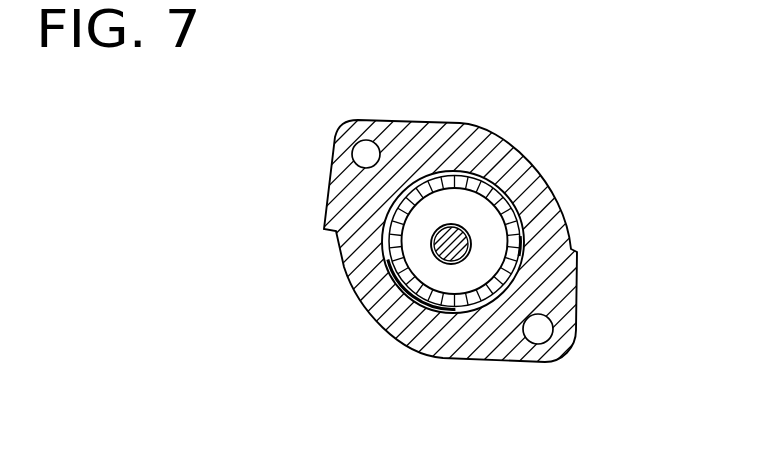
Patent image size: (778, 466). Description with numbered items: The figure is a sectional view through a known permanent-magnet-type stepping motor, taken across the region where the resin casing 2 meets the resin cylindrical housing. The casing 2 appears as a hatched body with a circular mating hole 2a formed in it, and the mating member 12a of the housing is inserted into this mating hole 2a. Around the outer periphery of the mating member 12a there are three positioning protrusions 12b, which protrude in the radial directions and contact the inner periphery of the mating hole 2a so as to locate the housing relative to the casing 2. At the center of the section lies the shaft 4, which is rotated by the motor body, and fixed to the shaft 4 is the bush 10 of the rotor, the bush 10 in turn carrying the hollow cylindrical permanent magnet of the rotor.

The resin casing 2 is at (550, 207).
The circular mating hole 2a is at (520, 262).
The shaft 4 is at (390, 280).
The bush 10 is at (449, 259).
The mating member 12a is at (497, 197).
The positioning protrusions 12b is at (463, 170).